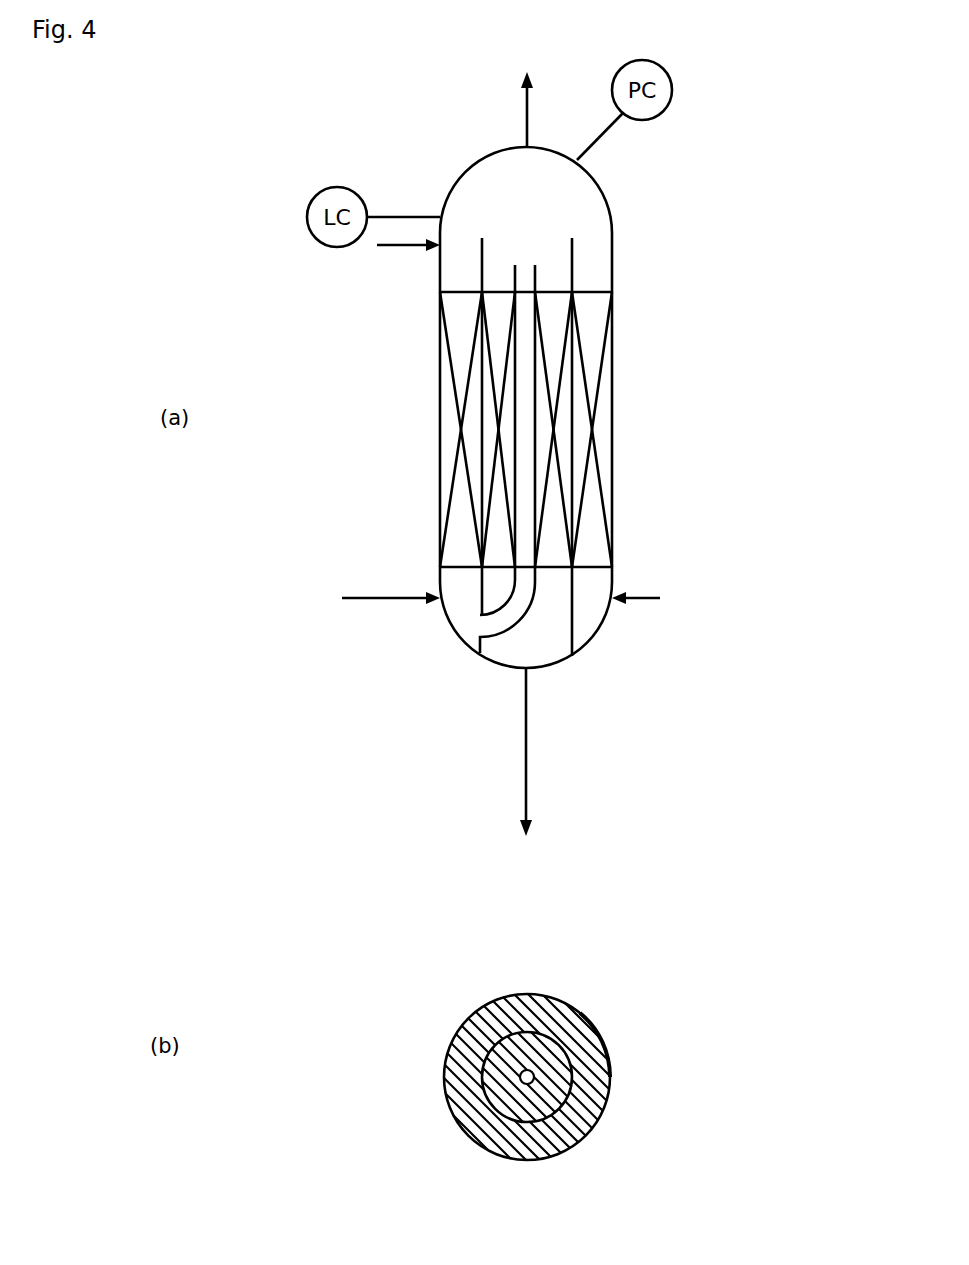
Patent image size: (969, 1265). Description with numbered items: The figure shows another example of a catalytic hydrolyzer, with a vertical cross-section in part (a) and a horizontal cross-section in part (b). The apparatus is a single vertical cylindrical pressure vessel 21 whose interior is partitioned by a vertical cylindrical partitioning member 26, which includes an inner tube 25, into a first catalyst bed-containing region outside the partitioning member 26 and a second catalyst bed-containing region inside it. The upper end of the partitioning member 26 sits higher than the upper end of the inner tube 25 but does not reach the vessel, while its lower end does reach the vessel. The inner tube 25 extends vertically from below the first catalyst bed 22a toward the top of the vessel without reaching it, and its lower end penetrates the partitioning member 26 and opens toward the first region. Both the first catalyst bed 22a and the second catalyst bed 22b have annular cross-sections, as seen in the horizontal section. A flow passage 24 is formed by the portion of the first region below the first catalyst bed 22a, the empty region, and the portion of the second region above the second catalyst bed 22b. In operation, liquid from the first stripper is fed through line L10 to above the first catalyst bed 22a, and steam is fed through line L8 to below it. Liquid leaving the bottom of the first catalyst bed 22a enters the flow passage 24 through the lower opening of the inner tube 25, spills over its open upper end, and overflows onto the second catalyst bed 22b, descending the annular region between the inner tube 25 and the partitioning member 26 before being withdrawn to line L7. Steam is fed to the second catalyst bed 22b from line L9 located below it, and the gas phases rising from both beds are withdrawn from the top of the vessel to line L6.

The stripping column (vessel) 21 is at (615, 207).
The first catalyst bed 22a is at (445, 413).
The second catalyst bed 22b is at (487, 455).
The flow passage 24 is at (517, 595).
The inner tube 25 is at (543, 270).
The vertical cylindrical partitioning member 26 is at (580, 242).
The line L6 is at (530, 108).
The line L7 is at (530, 748).
The line L8 is at (373, 590).
The line L9 is at (643, 590).
The line L10 is at (393, 257).